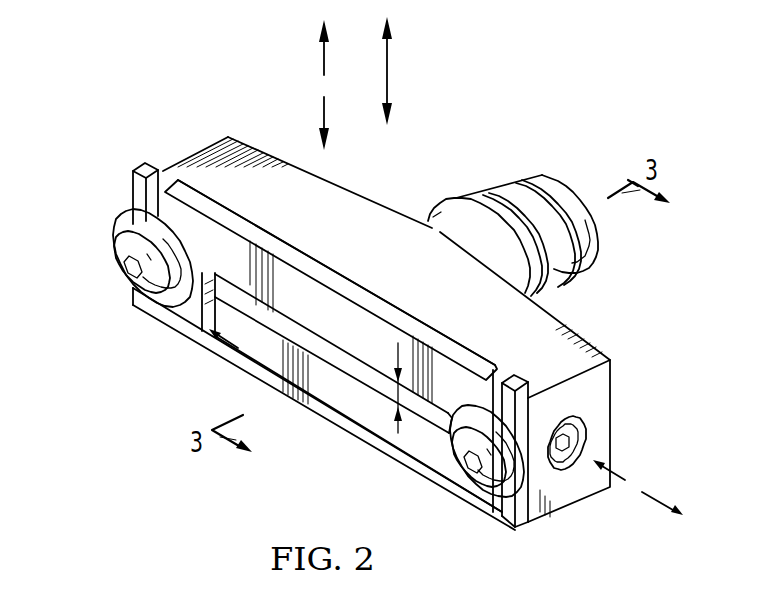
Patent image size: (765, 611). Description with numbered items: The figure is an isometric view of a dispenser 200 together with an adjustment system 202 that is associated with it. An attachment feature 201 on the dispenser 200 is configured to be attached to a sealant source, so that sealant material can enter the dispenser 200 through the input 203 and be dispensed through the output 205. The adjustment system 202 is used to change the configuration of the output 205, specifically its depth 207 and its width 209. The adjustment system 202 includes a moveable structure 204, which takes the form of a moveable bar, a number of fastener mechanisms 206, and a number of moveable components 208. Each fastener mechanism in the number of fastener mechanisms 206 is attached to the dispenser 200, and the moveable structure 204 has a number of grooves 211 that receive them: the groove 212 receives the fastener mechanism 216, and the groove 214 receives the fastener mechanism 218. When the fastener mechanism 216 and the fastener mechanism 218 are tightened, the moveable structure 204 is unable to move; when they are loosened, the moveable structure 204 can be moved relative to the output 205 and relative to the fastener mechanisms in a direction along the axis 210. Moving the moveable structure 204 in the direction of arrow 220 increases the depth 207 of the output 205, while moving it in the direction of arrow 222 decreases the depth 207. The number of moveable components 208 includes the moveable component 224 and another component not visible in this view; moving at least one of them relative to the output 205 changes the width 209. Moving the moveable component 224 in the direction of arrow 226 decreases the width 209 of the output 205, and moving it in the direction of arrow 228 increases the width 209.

The dispenser 200 is at (217, 140).
The attachment feature 201 is at (485, 186).
The adjustment system 202 is at (370, 275).
The input 203 is at (600, 250).
The moveable structure 204 is at (310, 258).
The output 205 is at (348, 372).
The number of fastener mechanisms 206 is at (108, 280).
The depth 207 is at (395, 345).
The number of moveable components 208 is at (573, 473).
The width 209 is at (365, 426).
The axis 210 is at (388, 72).
The number of grooves 211 is at (488, 382).
The groove 212 is at (163, 175).
The groove 214 is at (508, 368).
The fastener mechanism 216 is at (110, 232).
The fastener mechanism 218 is at (478, 496).
The arrow 220 is at (322, 60).
The arrow 222 is at (322, 108).
The moveable component 224 is at (588, 428).
The arrow 226 is at (625, 480).
The arrow 228 is at (648, 494).